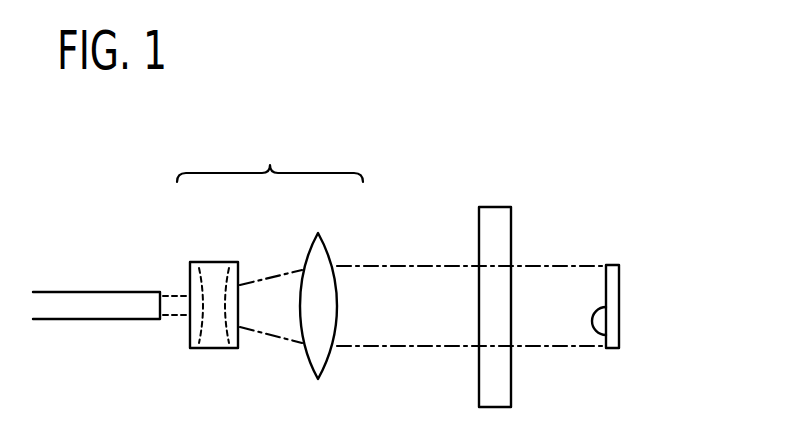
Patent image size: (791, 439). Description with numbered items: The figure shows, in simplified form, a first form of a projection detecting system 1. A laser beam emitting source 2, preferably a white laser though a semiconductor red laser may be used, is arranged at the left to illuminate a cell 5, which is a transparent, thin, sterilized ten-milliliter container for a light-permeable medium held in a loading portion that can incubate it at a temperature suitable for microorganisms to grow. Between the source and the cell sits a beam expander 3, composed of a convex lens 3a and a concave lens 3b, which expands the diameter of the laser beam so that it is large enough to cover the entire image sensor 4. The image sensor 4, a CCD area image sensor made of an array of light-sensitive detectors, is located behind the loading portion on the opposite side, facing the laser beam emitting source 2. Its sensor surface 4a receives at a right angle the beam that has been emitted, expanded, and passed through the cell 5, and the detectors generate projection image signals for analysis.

The projection detecting system 1 is at (608, 248).
The laser beam emitting source 2 is at (115, 310).
The beam expander 3 is at (270, 146).
The convex lens 3a is at (213, 264).
The concave lens 3b is at (322, 248).
The image sensor 4 is at (613, 297).
The sensor surface 4a is at (595, 333).
The cell 5 is at (505, 385).